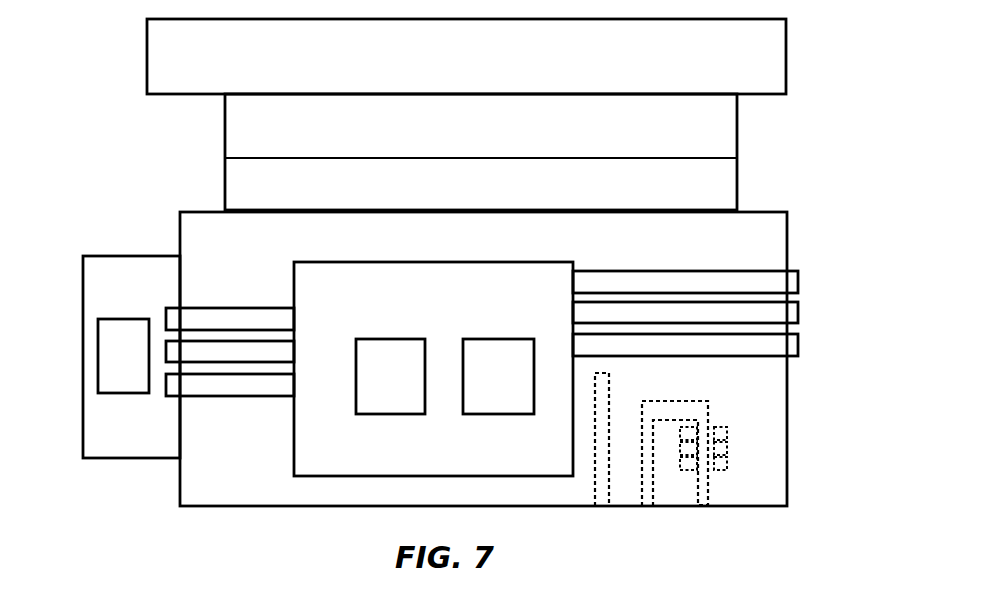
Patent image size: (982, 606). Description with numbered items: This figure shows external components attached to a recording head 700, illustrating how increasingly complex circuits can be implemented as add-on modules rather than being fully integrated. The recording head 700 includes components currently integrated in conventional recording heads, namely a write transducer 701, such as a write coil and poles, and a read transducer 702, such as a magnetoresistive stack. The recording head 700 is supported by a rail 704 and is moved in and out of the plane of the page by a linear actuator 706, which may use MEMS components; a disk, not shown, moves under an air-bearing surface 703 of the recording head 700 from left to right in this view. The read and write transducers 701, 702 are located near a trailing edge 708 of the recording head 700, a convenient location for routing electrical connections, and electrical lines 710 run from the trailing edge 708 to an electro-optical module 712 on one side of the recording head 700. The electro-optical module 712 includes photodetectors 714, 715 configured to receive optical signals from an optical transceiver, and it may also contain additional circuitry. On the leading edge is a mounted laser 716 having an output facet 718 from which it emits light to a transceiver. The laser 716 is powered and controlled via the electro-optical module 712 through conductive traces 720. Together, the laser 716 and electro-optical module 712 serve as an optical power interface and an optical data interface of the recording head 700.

The recording head 700 is at (189, 490).
The write transducer 701 is at (655, 497).
The read transducer 702 is at (585, 508).
The air-bearing surface 703 is at (762, 508).
The rail 704 is at (147, 60).
The linear actuator 706 is at (225, 176).
The trailing edge 708 is at (788, 472).
The electrical lines 710 is at (798, 281).
The electro-optical module 712 is at (327, 467).
The photodetector 714 is at (402, 405).
The photodetector 715 is at (483, 407).
The laser 716 is at (115, 452).
The output facet 718 is at (102, 365).
The conductive traces 720 is at (202, 350).